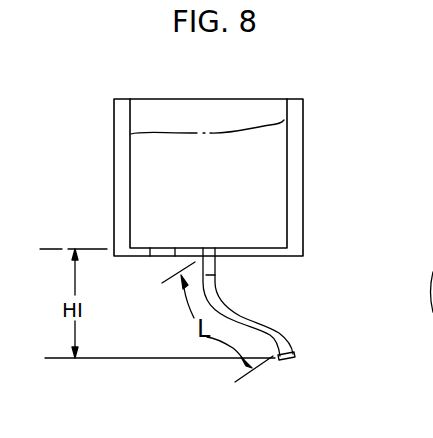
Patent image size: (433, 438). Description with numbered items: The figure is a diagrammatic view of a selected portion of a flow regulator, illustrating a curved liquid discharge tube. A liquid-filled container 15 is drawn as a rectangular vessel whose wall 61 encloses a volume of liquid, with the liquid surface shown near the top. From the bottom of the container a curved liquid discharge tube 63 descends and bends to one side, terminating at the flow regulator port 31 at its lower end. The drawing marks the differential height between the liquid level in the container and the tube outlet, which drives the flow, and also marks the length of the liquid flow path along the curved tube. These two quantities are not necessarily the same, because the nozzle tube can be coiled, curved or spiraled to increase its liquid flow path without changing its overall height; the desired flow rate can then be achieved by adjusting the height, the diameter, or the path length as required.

The liquid 15 is at (213, 172).
The tank 61 is at (165, 248).
The discharge tube 63 is at (260, 323).
The flow regulator port 31 is at (287, 359).